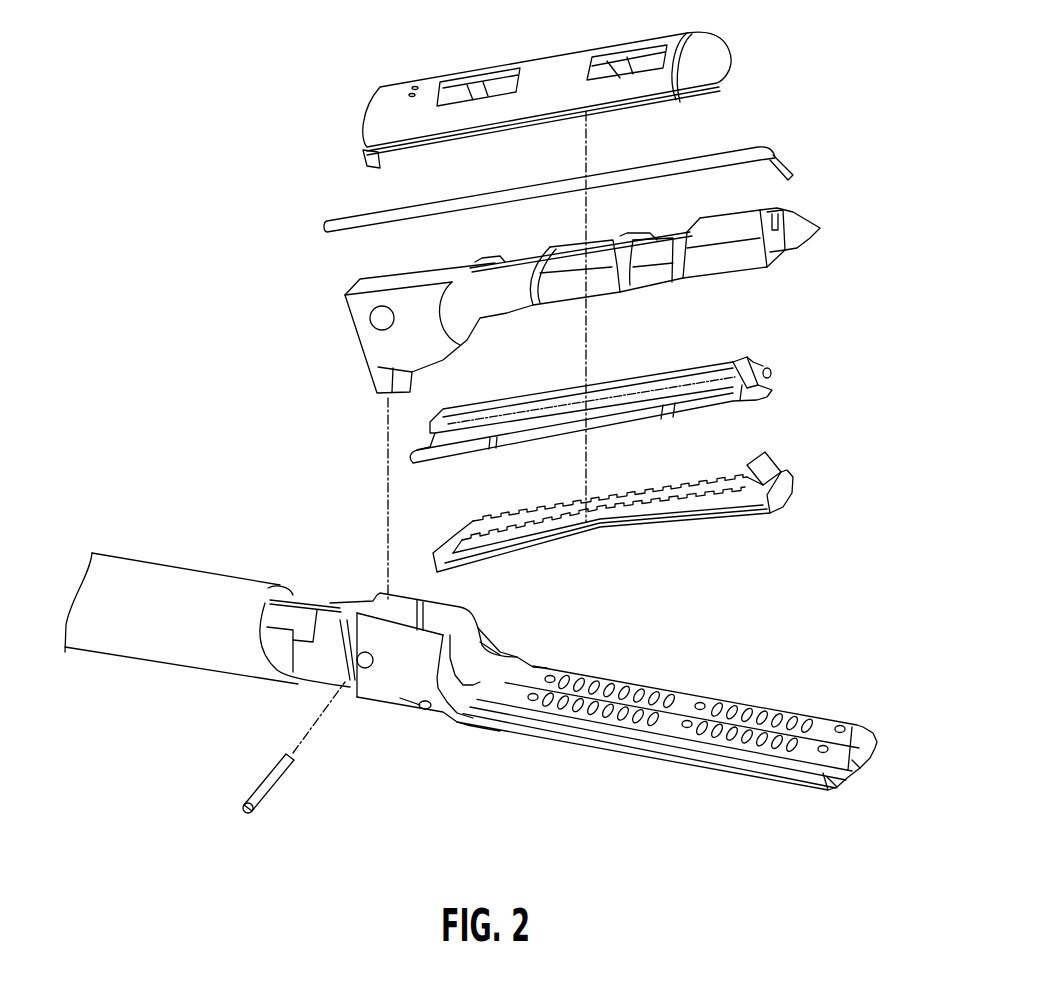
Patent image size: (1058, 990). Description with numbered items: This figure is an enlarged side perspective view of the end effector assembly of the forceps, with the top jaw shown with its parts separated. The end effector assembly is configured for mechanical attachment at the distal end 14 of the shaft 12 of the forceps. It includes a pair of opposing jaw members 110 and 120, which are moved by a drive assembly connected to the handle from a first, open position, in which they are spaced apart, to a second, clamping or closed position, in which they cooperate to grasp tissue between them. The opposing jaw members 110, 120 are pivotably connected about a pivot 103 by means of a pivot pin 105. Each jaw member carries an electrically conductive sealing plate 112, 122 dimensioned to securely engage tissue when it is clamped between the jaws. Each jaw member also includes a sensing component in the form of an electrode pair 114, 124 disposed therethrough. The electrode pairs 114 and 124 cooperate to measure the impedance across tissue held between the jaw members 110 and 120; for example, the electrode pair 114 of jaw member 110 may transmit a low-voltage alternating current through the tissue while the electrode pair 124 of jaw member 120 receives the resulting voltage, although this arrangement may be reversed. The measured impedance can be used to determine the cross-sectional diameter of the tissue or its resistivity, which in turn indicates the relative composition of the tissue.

The shaft 12 is at (142, 568).
The distal end 14 is at (253, 585).
The pivot 103 is at (370, 670).
The pivot pin 105 is at (263, 778).
The jaw member 110 is at (831, 0).
The electrically conductive sealing plate 112 is at (706, 520).
The electrode pair 114 is at (353, 218).
The jaw member 120 is at (873, 757).
The electrically conductive sealing plate 122 is at (850, 737).
The electrode pair 124 is at (717, 720).